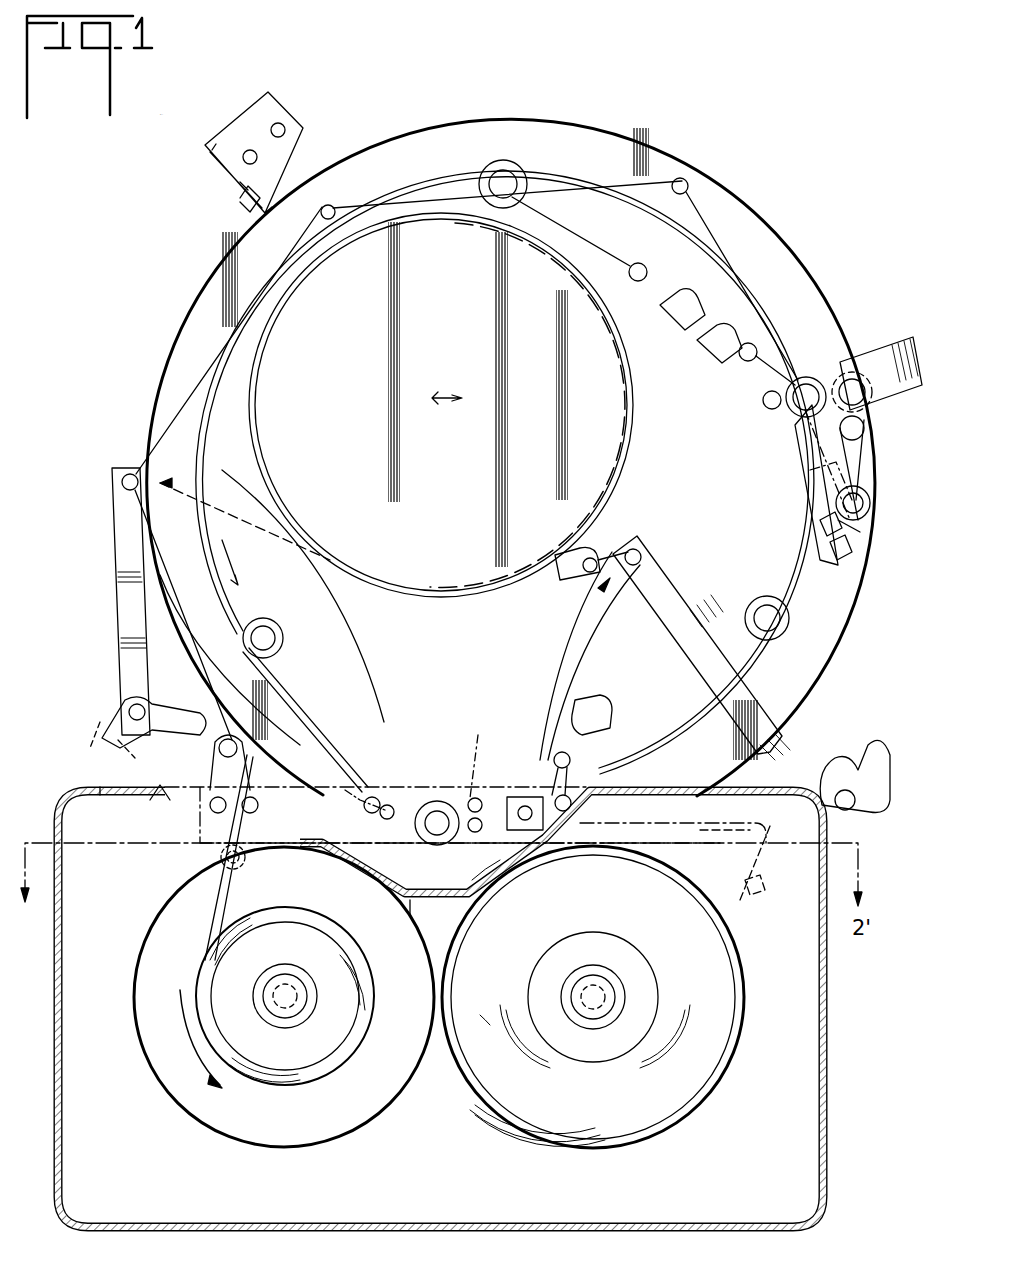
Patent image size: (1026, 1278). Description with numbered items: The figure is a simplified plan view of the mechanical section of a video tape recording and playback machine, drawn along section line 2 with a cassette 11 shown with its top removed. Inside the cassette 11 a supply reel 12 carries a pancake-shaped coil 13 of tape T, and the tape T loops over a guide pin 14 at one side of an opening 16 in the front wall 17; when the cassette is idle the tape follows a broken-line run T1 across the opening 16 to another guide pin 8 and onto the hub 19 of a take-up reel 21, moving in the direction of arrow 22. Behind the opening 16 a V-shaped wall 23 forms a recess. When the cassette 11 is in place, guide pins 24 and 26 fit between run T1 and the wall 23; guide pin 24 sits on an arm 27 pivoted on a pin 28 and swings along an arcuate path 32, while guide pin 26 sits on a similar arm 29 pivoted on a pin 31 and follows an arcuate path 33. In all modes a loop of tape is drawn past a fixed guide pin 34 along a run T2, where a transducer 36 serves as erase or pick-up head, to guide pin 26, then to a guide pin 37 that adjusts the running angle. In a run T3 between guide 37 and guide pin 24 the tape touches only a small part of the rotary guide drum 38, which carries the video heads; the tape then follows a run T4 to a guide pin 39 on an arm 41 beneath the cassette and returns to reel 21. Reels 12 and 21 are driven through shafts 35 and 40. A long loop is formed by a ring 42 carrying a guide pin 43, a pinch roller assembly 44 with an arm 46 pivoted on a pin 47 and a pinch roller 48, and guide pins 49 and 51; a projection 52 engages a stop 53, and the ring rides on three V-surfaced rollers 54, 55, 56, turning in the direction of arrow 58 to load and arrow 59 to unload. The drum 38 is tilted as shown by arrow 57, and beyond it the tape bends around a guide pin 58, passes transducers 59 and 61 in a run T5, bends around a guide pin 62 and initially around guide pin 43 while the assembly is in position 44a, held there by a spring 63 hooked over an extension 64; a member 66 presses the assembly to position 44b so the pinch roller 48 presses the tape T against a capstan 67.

The cassette 11 is at (80, 770).
The section line 2 is at (438, 888).
The guide pin 8 is at (258, 812).
The supply reel 12 is at (500, 1118).
The pancake-shaped coil 13 is at (728, 965).
The guide pin 14 is at (575, 808).
The opening 16 is at (180, 790).
The front wall 17 is at (120, 797).
The hub 19 is at (322, 950).
The take-up reel 21 is at (348, 1140).
The arrow 22 is at (185, 1030).
The V-shaped wall 23 is at (429, 913).
The guide pin 24 is at (128, 474).
The guide pin 26 is at (642, 550).
The arm 27 is at (115, 612).
The pin 28 is at (120, 708).
The arm 29 is at (686, 590).
The pin 31 is at (855, 808).
The arcuate path 32 is at (376, 645).
The arcuate path 33 is at (545, 692).
The fixed guide pin 34 is at (572, 760).
The shaft 35 is at (605, 990).
The transducer 36 is at (615, 714).
The guide pin 37 is at (567, 585).
The rotary guide drum 38 is at (633, 408).
The guide pin 39 is at (245, 748).
The shaft 40 is at (290, 1012).
The arm 41 is at (215, 848).
The ring 42 is at (522, 120).
The guide pin 43 is at (865, 440).
The pinch roller assembly 44 is at (412, 800).
The pinch roller assembly position 44a is at (810, 470).
The pinch roller assembly position 44b is at (800, 458).
The arm 46 is at (420, 838).
The pin 47 is at (870, 505).
The pinch roller 48 is at (806, 375).
The guide pin 49 is at (333, 206).
The guide pin 51 is at (682, 194).
The projection 52 is at (240, 205).
The stop 53 is at (250, 120).
The roller 54 is at (285, 648).
The roller 55 is at (518, 200).
The roller 56 is at (768, 596).
The arrow 57 is at (438, 400).
The guide pin 58 is at (240, 560).
The transducer 59 is at (680, 318).
The transducer 61 is at (710, 350).
The guide pin 62 is at (742, 360).
The spring 63 is at (862, 535).
The extension 64 is at (840, 560).
The member 66 is at (898, 345).
The capstan 67 is at (768, 410).
The tape T is at (650, 1135).
The tape run T1 is at (480, 752).
The tape run T2 is at (595, 655).
The tape run T3 is at (215, 492).
The tape run T4 is at (200, 648).
The tape run T5 is at (718, 310).